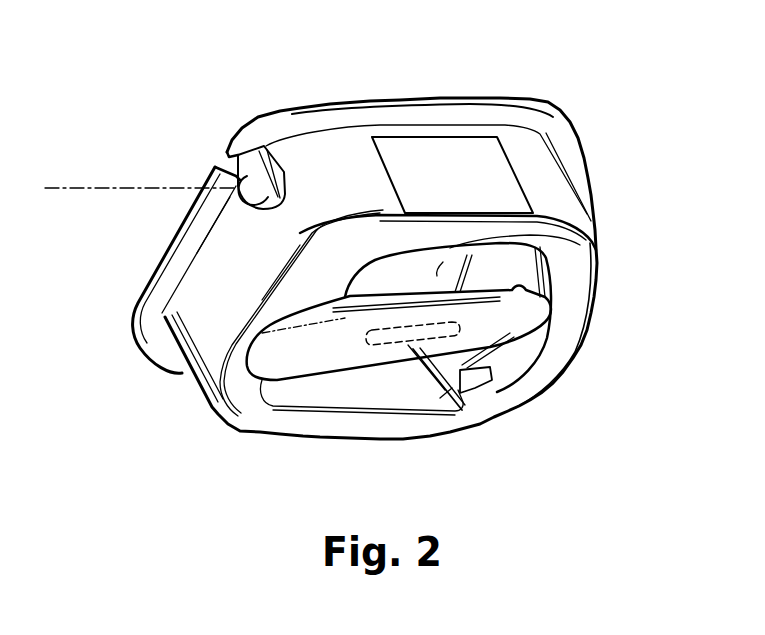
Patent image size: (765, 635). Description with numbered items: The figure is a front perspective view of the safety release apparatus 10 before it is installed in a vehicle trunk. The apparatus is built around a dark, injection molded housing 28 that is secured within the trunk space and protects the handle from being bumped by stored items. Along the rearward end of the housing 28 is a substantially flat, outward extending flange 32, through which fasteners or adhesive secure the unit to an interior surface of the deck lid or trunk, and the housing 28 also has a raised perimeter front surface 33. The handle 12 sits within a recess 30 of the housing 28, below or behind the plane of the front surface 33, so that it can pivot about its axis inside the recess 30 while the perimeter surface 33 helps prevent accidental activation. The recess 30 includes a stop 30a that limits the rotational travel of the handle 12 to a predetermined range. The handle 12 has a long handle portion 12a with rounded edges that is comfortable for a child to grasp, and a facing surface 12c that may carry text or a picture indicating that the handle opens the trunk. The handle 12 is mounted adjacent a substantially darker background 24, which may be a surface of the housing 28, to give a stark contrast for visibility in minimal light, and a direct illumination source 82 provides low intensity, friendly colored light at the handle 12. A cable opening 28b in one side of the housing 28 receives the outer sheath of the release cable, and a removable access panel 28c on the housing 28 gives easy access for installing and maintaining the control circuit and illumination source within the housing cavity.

The safety release apparatus 10 is at (150, 79).
The handle 12 is at (296, 352).
The handle portion 12a is at (380, 365).
The facing surface 12c is at (348, 348).
The background 24 is at (560, 237).
The housing 28 is at (210, 272).
The cable opening 28b is at (222, 170).
The removable access panel 28c is at (430, 160).
The recess 30 is at (413, 380).
The stop 30a is at (490, 390).
The flange 32 is at (553, 123).
The front surface 33 is at (572, 266).
The illumination source 82 is at (427, 337).